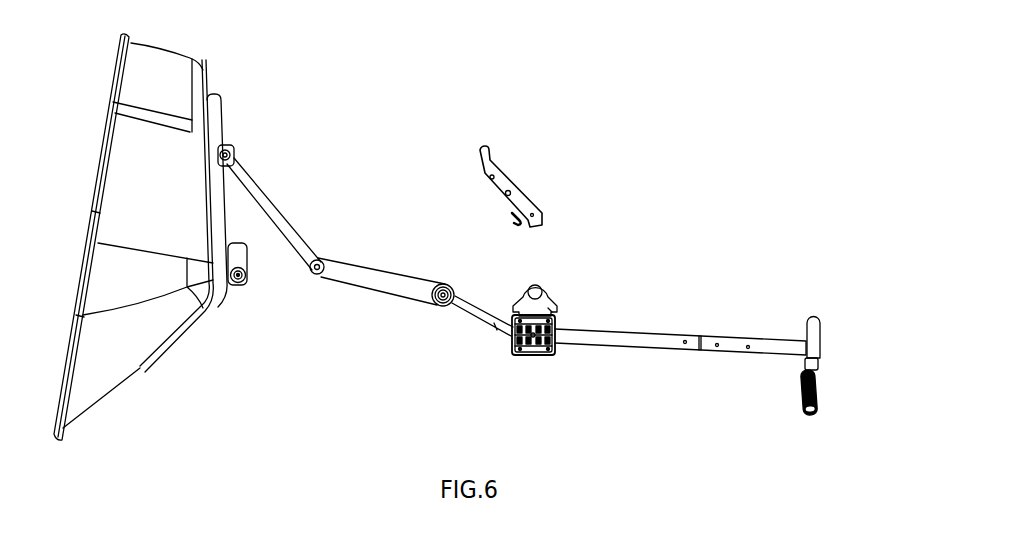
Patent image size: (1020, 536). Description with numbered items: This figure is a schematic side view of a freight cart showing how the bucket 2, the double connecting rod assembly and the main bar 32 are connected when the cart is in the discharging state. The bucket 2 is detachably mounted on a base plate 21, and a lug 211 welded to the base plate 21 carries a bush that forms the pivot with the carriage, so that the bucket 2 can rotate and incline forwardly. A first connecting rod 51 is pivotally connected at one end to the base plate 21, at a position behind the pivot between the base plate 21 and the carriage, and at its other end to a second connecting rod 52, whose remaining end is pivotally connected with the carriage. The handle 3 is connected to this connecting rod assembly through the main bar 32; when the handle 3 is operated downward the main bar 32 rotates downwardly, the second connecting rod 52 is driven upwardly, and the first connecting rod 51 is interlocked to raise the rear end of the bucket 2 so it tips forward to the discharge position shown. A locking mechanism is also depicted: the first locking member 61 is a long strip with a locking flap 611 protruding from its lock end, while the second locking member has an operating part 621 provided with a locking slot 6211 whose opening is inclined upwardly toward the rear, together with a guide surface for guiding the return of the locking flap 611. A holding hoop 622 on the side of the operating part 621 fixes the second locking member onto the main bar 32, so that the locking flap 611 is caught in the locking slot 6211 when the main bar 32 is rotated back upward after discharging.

The bucket 2 is at (132, 340).
The base plate 21 is at (209, 164).
The lug 211 is at (227, 285).
The first connecting rod 51 is at (270, 210).
The second connecting rod 52 is at (355, 275).
The first locking member 61 is at (508, 183).
The locking flap 611 is at (522, 220).
The operating part 621 is at (522, 282).
The locking slot 6211 is at (655, 302).
The holding hoop 622 is at (533, 352).
The main bar 32 is at (643, 342).
The handle 3 is at (817, 390).